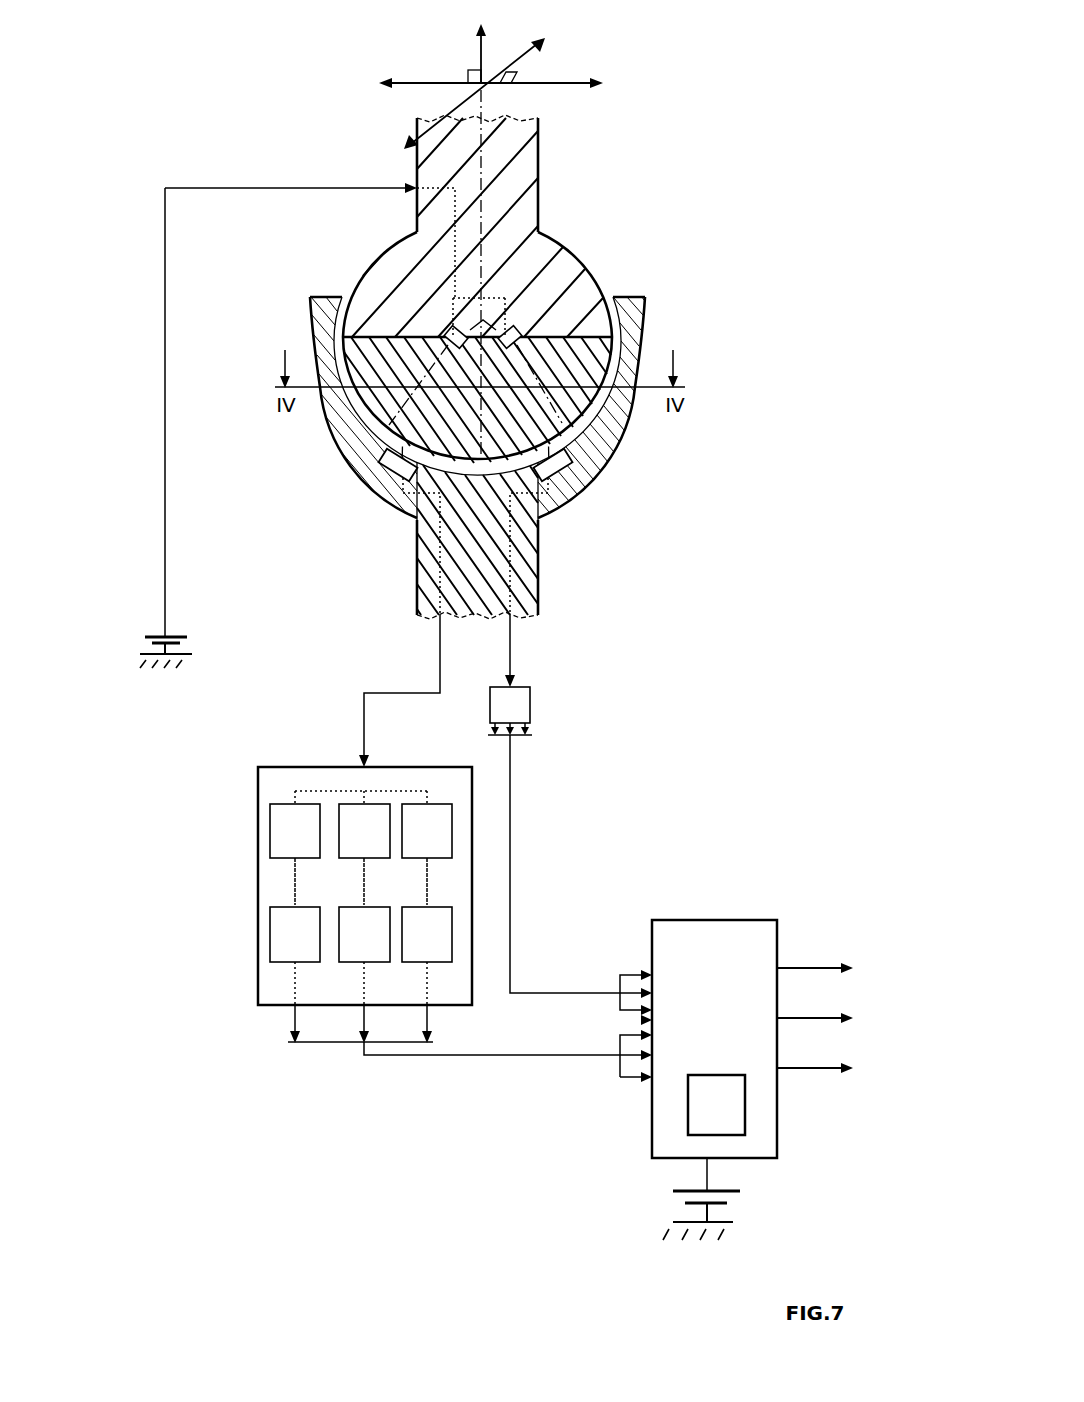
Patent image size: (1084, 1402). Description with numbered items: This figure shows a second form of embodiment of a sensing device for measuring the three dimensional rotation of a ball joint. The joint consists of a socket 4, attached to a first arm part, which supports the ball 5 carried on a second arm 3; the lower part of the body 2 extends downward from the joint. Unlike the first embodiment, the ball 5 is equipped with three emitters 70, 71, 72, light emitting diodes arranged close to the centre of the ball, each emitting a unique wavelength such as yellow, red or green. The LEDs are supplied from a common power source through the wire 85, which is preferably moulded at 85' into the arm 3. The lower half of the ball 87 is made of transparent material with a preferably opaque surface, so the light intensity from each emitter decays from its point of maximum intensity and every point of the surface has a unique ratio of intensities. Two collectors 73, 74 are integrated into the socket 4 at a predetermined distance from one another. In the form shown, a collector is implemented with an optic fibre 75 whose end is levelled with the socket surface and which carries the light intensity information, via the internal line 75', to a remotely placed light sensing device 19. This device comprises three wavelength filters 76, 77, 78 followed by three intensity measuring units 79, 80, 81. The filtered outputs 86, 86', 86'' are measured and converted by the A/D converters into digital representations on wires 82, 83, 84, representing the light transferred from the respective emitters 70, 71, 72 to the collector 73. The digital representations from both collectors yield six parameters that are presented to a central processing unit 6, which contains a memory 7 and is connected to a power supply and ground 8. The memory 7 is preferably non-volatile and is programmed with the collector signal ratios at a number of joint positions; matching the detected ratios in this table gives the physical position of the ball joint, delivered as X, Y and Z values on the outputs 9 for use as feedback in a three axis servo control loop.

The lower shaft of probe body 2 is at (524, 558).
The second arm 3 is at (507, 190).
The socket 4 is at (630, 334).
The ball 5 is at (532, 283).
The central processing unit 6 is at (683, 943).
The memory 7 is at (720, 1098).
The power supply 8 is at (170, 636).
The outputs 9 is at (800, 1017).
The light sensing device 19 is at (517, 706).
The emitter 70 is at (450, 322).
The emitter 71 is at (462, 328).
The emitter 72 is at (518, 328).
The collector 73 is at (403, 475).
The collector 74 is at (553, 470).
The optic fibre 75 is at (367, 691).
The internal signal line 75' is at (459, 546).
The wavelength filter 76 is at (279, 828).
The wavelength filter 77 is at (352, 815).
The wavelength filter 78 is at (438, 822).
The intensity measuring unit 79 is at (284, 932).
The intensity measuring unit 80 is at (353, 955).
The intensity measuring unit 81 is at (425, 955).
The wire 82 is at (293, 1026).
The wire 83 is at (364, 1026).
The wire 84 is at (428, 1027).
The wire 85 is at (269, 410).
The moulded wire portion 85' is at (434, 245).
The filtered output 86 is at (260, 882).
The connection line 86' is at (341, 882).
The connection line 86'' is at (406, 882).
The lower half of the ball 87 is at (628, 388).